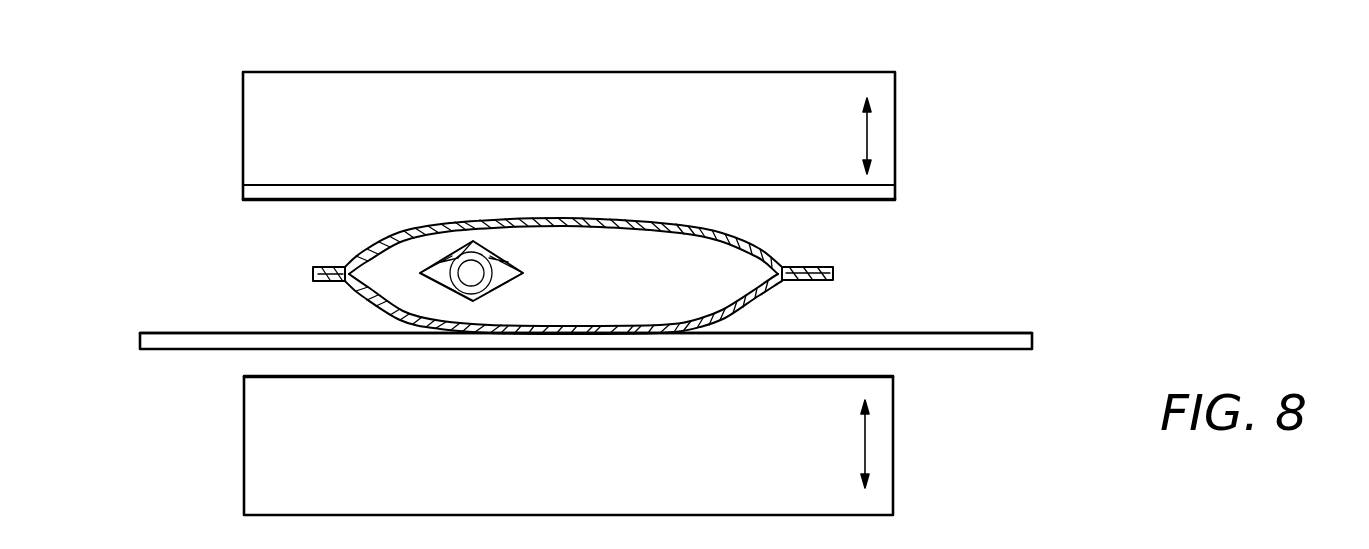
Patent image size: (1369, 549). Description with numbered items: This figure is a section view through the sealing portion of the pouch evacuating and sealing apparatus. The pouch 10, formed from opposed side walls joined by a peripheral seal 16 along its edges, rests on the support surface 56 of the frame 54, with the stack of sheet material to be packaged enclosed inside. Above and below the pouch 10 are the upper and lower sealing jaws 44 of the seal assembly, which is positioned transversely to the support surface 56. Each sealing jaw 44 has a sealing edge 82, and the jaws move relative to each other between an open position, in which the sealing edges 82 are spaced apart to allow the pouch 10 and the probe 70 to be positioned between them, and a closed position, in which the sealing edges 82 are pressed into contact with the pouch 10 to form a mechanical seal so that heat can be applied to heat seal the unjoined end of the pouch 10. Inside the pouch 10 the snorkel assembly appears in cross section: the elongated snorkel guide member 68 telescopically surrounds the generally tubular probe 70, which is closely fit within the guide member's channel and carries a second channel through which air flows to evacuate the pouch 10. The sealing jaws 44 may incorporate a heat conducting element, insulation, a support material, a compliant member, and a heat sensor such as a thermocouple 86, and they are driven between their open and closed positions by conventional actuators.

The pouch 10 is at (757, 246).
The peripheral seal 16 is at (335, 267).
The sealing jaws 44 is at (874, 72).
The frame 54 is at (1035, 340).
The support surface 56 is at (952, 333).
The snorkel guide member 68 is at (503, 284).
The probe 70 is at (494, 259).
The sealing edge 82 is at (853, 200).
The thermocouple 86 is at (275, 198).